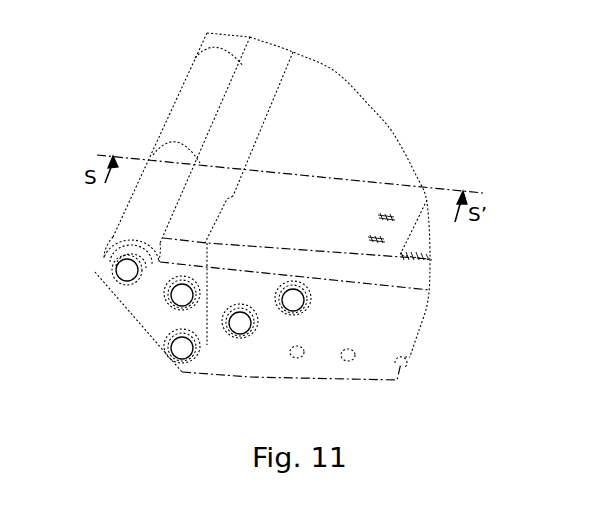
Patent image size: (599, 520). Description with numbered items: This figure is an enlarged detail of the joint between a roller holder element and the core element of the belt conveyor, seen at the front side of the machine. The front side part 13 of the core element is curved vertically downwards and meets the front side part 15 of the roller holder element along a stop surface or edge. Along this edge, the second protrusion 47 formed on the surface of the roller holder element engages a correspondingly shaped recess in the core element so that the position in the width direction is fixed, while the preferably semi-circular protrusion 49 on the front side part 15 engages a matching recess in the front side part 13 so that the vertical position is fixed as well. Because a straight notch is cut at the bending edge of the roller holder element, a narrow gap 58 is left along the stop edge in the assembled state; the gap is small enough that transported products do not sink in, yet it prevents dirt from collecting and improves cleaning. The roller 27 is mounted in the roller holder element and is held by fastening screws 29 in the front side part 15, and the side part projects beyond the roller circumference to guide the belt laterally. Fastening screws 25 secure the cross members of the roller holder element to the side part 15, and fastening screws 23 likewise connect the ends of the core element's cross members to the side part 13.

The front side part of the core element 13 is at (350, 378).
The front side part of the roller holder element 15 is at (115, 296).
The fastening screws for cross member in core element 23 is at (302, 297).
The fastening screws for cross member in roller holder element 25 is at (182, 298).
The roller 27 is at (187, 72).
The fastening screws for roller 29 is at (115, 267).
The second protrusion in surface of roller holder element 47 is at (227, 200).
The protrusion in front side part of roller holder element 49 is at (213, 350).
The gap 58 is at (210, 243).